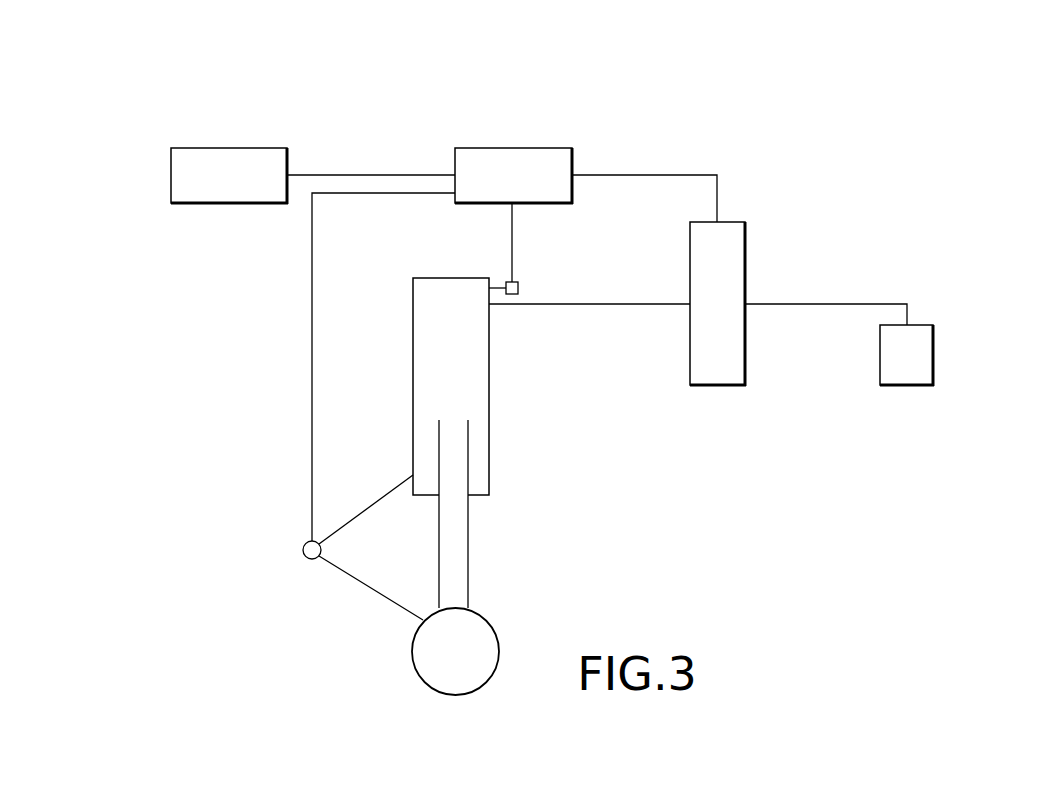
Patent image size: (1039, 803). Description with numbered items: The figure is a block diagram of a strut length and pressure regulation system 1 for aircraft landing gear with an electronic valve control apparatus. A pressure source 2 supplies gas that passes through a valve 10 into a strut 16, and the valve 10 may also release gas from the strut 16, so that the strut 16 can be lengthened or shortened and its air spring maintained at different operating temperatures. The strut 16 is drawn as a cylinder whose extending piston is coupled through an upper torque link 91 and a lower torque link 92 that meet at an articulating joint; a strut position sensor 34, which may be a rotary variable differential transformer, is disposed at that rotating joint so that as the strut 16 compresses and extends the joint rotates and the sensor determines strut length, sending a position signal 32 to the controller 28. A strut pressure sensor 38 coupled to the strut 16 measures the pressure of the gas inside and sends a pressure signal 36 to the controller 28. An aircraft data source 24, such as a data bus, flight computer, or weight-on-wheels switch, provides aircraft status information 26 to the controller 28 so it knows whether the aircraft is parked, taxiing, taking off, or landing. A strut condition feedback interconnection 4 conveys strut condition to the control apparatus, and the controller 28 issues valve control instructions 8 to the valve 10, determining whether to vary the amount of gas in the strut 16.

The strut length and pressure regulation system 1 is at (606, 58).
The pressure source 2 is at (933, 336).
The strut condition feedback interconnection 4 is at (883, 304).
The valve control instructions 8 is at (661, 175).
The valve 10 is at (745, 266).
The strut 16 is at (489, 417).
The aircraft data source 24 is at (237, 148).
The aircraft status information 26 is at (364, 175).
The controller 28 is at (521, 148).
The position signal 32 is at (312, 251).
The strut position sensor 34 is at (303, 550).
The pressure signal 36 is at (512, 222).
The strut pressure sensor 38 is at (518, 288).
The upper torque link 91 is at (357, 516).
The lower torque link 92 is at (363, 583).